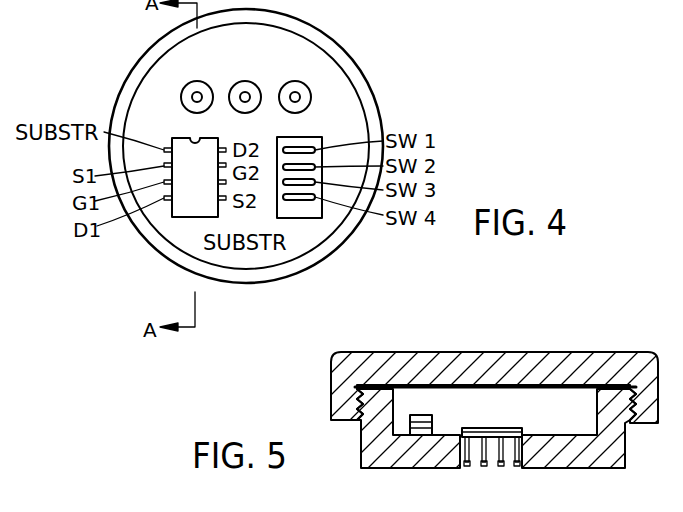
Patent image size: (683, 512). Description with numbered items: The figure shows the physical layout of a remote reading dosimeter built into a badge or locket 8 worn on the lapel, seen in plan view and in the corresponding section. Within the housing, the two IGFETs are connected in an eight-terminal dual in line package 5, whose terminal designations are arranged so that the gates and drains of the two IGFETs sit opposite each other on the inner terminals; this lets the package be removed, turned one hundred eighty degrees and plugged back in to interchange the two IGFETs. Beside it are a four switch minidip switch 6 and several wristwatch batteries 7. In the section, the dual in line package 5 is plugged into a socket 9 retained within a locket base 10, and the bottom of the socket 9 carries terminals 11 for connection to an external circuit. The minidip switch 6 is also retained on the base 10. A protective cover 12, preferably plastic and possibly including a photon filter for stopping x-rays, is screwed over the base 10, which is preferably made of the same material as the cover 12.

In FIG. 4, the dual in line package 5 is at (177, 137).
In FIG. 5, the dual in line package 5 is at (485, 428).
In FIG. 4, the four switch minidip switch 6 is at (323, 208).
In FIG. 4, the wristwatch batteries 7 is at (291, 82).
In FIG. 5, the wristwatch batteries 7 is at (421, 415).
In FIG. 4, the badge or locket 8 is at (312, 26).
In FIG. 5, the socket 9 is at (528, 433).
In FIG. 5, the locket base 10 is at (578, 466).
In FIG. 5, the terminals 11 is at (500, 466).
In FIG. 5, the protective cover 12 is at (602, 353).